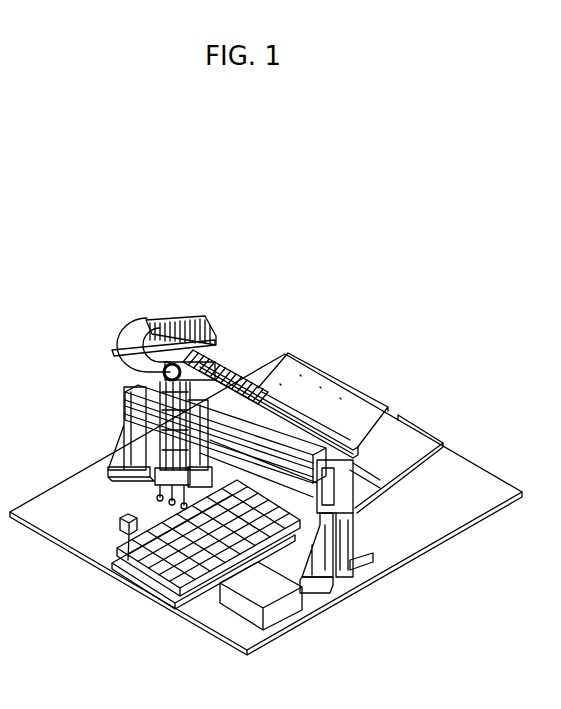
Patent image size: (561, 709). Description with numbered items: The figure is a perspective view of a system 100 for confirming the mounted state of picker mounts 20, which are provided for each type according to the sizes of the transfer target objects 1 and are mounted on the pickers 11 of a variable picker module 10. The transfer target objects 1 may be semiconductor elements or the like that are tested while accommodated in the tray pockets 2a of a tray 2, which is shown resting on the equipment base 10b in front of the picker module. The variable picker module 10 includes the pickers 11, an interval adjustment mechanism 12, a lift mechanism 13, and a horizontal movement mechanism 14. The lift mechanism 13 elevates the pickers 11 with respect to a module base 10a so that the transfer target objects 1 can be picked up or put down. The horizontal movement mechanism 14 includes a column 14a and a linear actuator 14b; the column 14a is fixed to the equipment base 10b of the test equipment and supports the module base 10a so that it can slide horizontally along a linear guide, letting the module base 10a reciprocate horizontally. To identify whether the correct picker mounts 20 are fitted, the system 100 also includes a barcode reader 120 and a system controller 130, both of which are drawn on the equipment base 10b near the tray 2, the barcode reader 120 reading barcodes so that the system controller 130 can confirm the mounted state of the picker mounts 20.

The transfer target objects 1 is at (120, 523).
The tray 2 is at (190, 588).
The tray pockets 2a is at (122, 570).
The variable picker module 10 is at (147, 300).
The module base 10a is at (225, 378).
The equipment base 10b is at (477, 505).
The pickers 11 is at (160, 458).
The interval adjustment mechanism 12 is at (272, 404).
The lift mechanism 13 is at (205, 382).
The horizontal movement mechanism 14 is at (360, 555).
The column 14a is at (342, 568).
The linear actuator 14b is at (350, 490).
The picker mounts 20 is at (157, 490).
The system for confirming a mounted state of picker mounts 100 is at (405, 373).
The barcode reader 120 is at (258, 520).
The system controller 130 is at (255, 615).